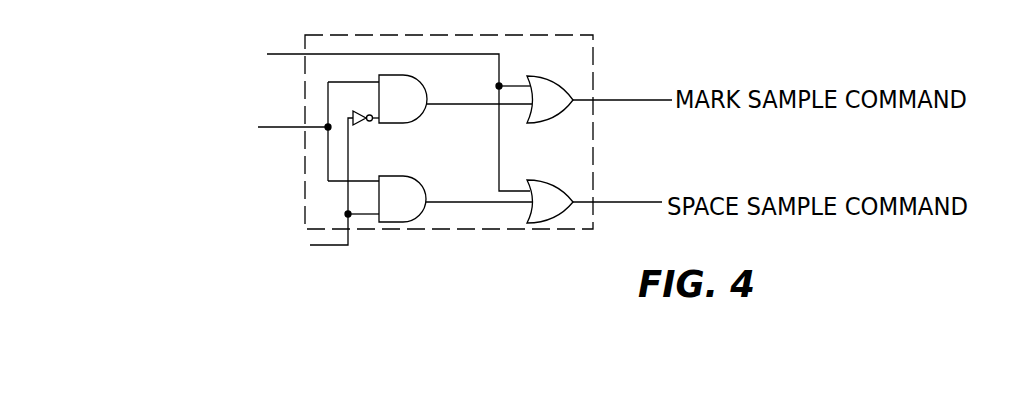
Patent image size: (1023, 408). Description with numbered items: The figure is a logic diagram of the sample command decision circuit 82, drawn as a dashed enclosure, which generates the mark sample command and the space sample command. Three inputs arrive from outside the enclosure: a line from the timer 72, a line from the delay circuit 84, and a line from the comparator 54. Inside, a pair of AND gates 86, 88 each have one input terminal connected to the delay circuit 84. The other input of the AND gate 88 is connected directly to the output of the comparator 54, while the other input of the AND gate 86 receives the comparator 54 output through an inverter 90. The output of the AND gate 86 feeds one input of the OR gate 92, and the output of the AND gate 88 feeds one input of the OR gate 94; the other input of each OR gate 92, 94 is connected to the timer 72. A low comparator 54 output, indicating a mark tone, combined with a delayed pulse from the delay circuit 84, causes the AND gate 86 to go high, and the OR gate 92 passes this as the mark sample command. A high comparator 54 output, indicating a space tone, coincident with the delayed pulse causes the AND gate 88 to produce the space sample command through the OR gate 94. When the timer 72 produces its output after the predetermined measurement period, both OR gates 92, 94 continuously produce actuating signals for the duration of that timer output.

The timer 72 is at (291, 115).
The delay circuit 84 is at (216, 131).
The comparator 54 is at (218, 186).
The sample command decision circuit 82 is at (583, 57).
The AND gate 86 is at (412, 88).
The AND gate 88 is at (412, 186).
The inverter 90 is at (360, 122).
The OR gate 92 is at (543, 122).
The OR gate 94 is at (550, 212).